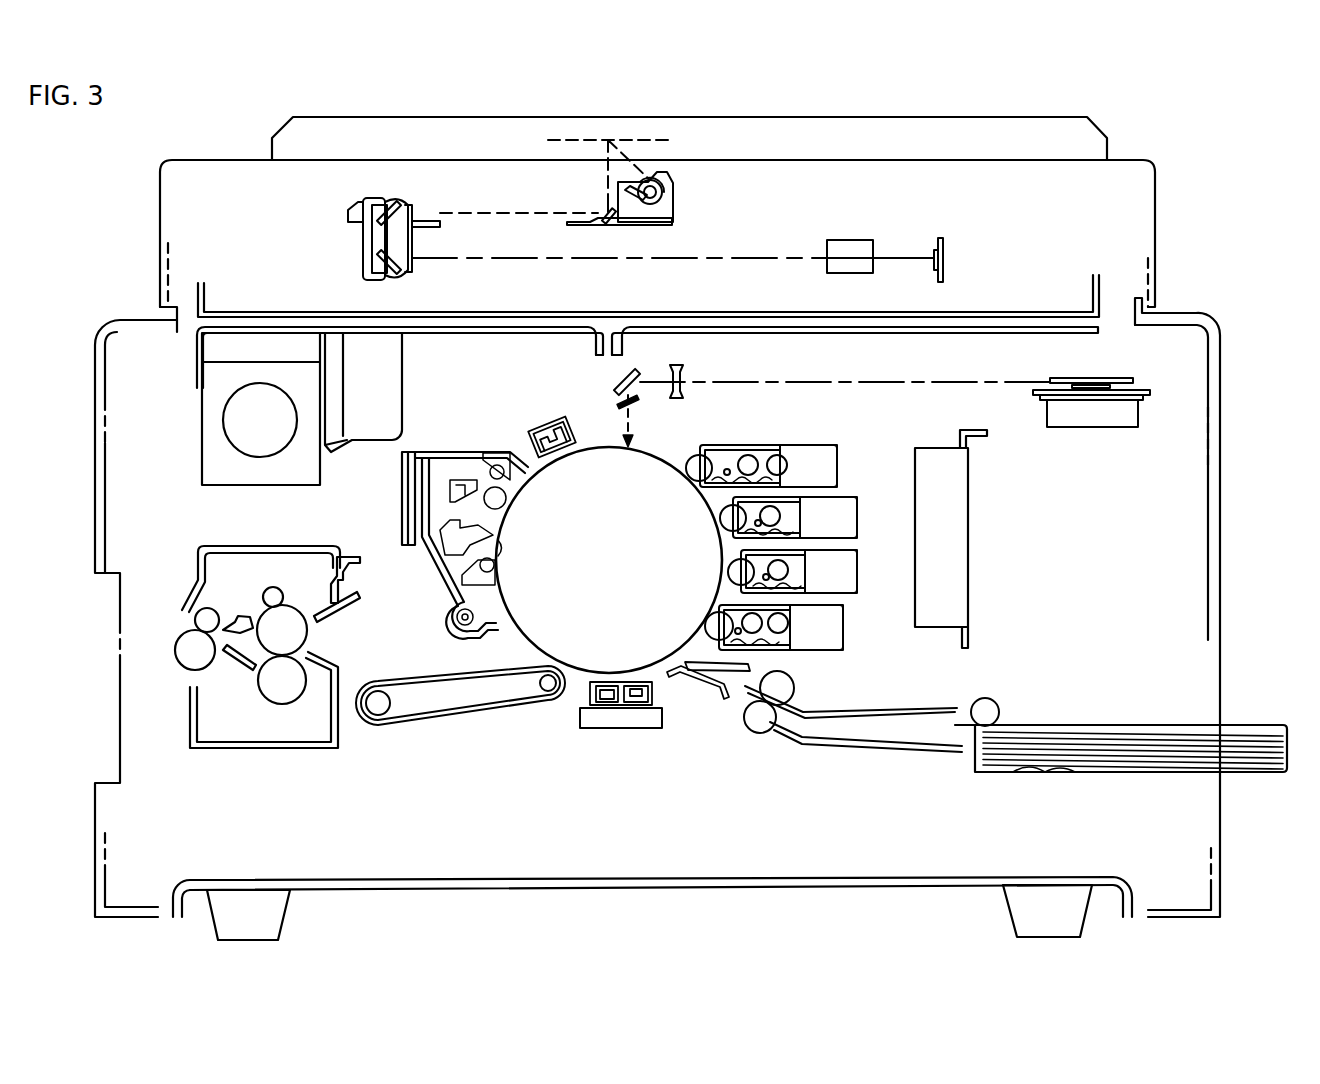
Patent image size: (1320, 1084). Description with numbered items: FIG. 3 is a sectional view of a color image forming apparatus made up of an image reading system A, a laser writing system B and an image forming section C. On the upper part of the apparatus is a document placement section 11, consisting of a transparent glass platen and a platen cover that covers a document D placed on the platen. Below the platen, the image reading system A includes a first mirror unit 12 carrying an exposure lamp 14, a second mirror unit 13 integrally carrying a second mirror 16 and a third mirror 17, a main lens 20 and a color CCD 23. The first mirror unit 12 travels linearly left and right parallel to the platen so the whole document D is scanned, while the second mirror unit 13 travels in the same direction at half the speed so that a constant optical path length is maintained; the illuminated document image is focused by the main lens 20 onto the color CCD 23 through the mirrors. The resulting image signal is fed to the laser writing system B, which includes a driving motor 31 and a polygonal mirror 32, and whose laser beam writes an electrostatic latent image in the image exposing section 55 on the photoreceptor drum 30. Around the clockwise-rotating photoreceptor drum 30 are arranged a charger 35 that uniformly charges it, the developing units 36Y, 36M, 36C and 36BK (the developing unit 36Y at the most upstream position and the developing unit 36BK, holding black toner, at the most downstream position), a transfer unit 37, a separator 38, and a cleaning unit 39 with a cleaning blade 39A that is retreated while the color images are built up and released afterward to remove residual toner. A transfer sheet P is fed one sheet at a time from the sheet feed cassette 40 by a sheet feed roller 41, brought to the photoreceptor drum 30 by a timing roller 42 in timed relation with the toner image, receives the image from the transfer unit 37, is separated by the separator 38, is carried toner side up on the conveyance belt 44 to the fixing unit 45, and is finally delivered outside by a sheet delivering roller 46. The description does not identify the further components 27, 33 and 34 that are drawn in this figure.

The image reading system A is at (215, 240).
The laser writing system B is at (965, 355).
The image forming section C is at (585, 368).
The document D is at (627, 138).
The transfer sheet P is at (1092, 740).
The document placement section 11 is at (744, 150).
The first mirror unit 12 is at (682, 222).
The second mirror unit 13 is at (362, 254).
The exposure lamp 14 is at (672, 199).
The second mirror 16 is at (405, 200).
The third mirror 17 is at (405, 272).
The main lens 20 is at (853, 240).
The color CCD 23 is at (940, 240).
The reflecting mirror 27 is at (605, 209).
The photoreceptor drum 30 is at (657, 447).
The driving motor 31 is at (1096, 428).
The polygonal mirror 32 is at (1108, 377).
The lens 33 is at (684, 376).
The mirror 34 is at (632, 370).
The charger 35 is at (543, 425).
The developing unit 36Y is at (838, 466).
The developing unit 36M is at (886, 494).
The developing unit 36C is at (887, 566).
The developing unit 36BK is at (844, 632).
The transfer unit 37 is at (665, 697).
The separator 38 is at (590, 702).
The cleaning unit 39 is at (440, 452).
The cleaning blade 39A is at (495, 546).
The sheet feed cassette 40 is at (1168, 727).
The sheet feed roller 41 is at (995, 703).
The timing roller 42 is at (770, 733).
The conveyance belt 44 is at (452, 722).
The fixing unit 45 is at (204, 547).
The sheet delivering roller 46 is at (185, 655).
The image exposing section 55 is at (625, 447).